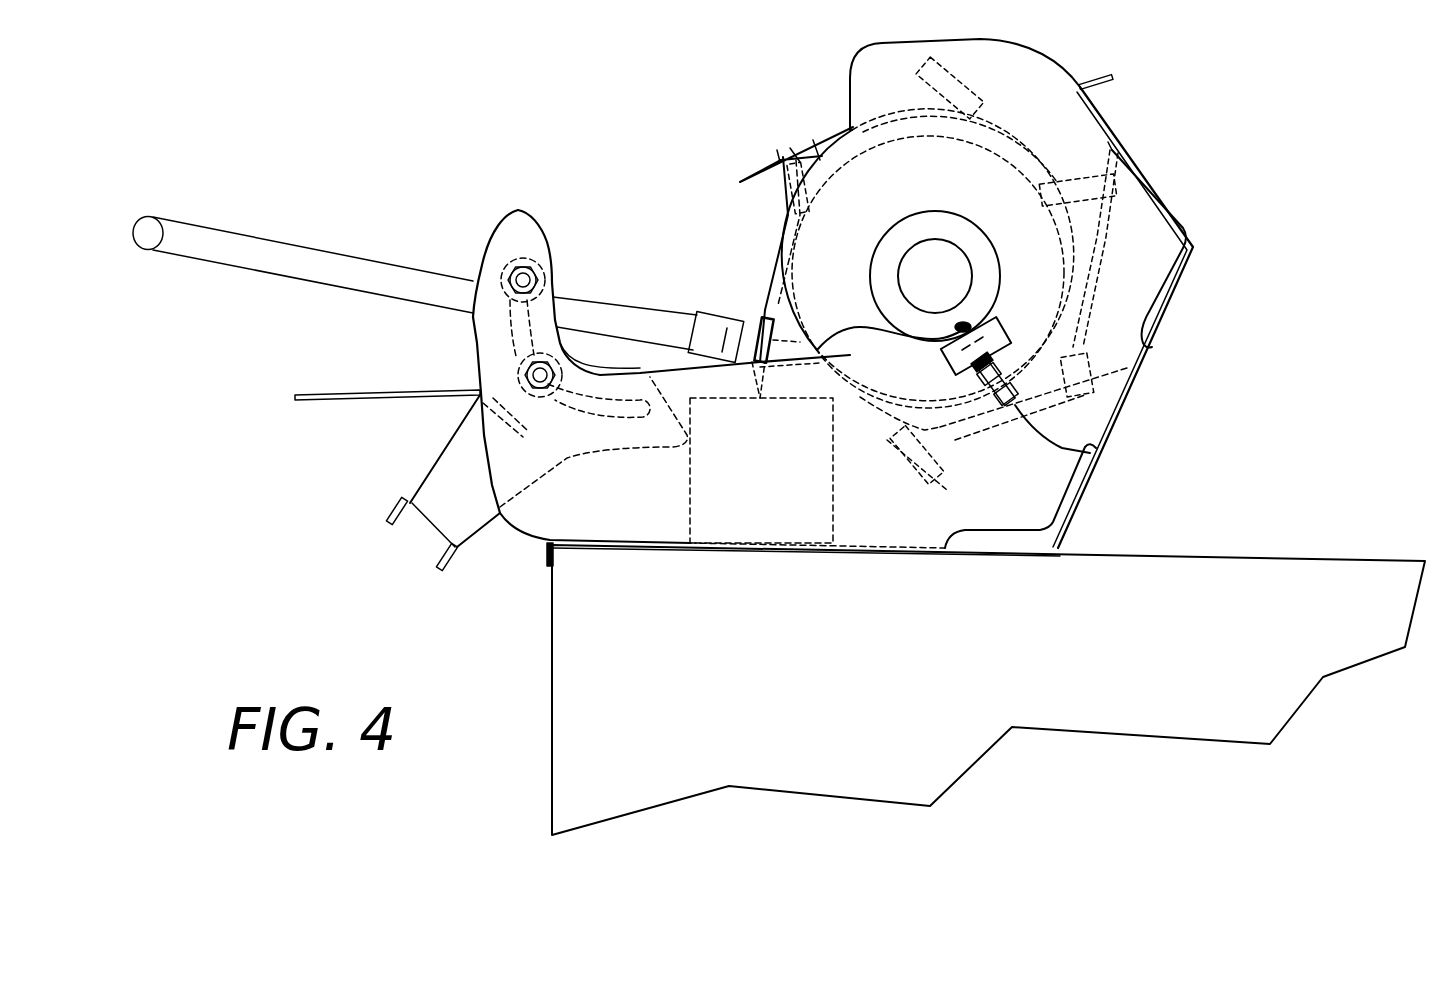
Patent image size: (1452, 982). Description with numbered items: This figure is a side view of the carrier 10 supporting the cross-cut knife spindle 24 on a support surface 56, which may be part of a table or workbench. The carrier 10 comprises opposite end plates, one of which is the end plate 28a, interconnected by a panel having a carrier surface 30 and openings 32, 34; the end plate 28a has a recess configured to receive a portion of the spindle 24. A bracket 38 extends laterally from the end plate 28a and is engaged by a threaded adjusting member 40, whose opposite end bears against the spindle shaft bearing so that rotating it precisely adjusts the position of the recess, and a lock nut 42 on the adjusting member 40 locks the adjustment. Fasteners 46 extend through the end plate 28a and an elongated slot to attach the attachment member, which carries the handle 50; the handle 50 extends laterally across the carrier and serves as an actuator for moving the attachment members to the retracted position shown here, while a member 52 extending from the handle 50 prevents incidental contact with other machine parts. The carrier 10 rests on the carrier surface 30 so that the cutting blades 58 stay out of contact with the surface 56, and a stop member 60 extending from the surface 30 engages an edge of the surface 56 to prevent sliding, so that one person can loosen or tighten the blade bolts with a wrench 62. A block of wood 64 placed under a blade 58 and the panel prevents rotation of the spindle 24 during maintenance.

The carrier 10 is at (1170, 384).
The cross-cut knife spindle 24 is at (817, 153).
The end plate 28a is at (1090, 423).
The carrier surface 30 is at (761, 551).
The opening 32 is at (1067, 507).
The opening 34 is at (1183, 240).
The bracket 38 is at (1000, 318).
The threaded adjusting member 40 is at (1100, 465).
The lock nut 42 is at (1012, 345).
The fastener 46 is at (537, 273).
The handle 50 is at (388, 505).
The member 52 is at (330, 398).
The support surface 56 is at (1230, 557).
The cutting blade 58 is at (755, 167).
The stop member 60 is at (549, 552).
The wrench 62 is at (337, 268).
The block of wood 64 is at (812, 502).